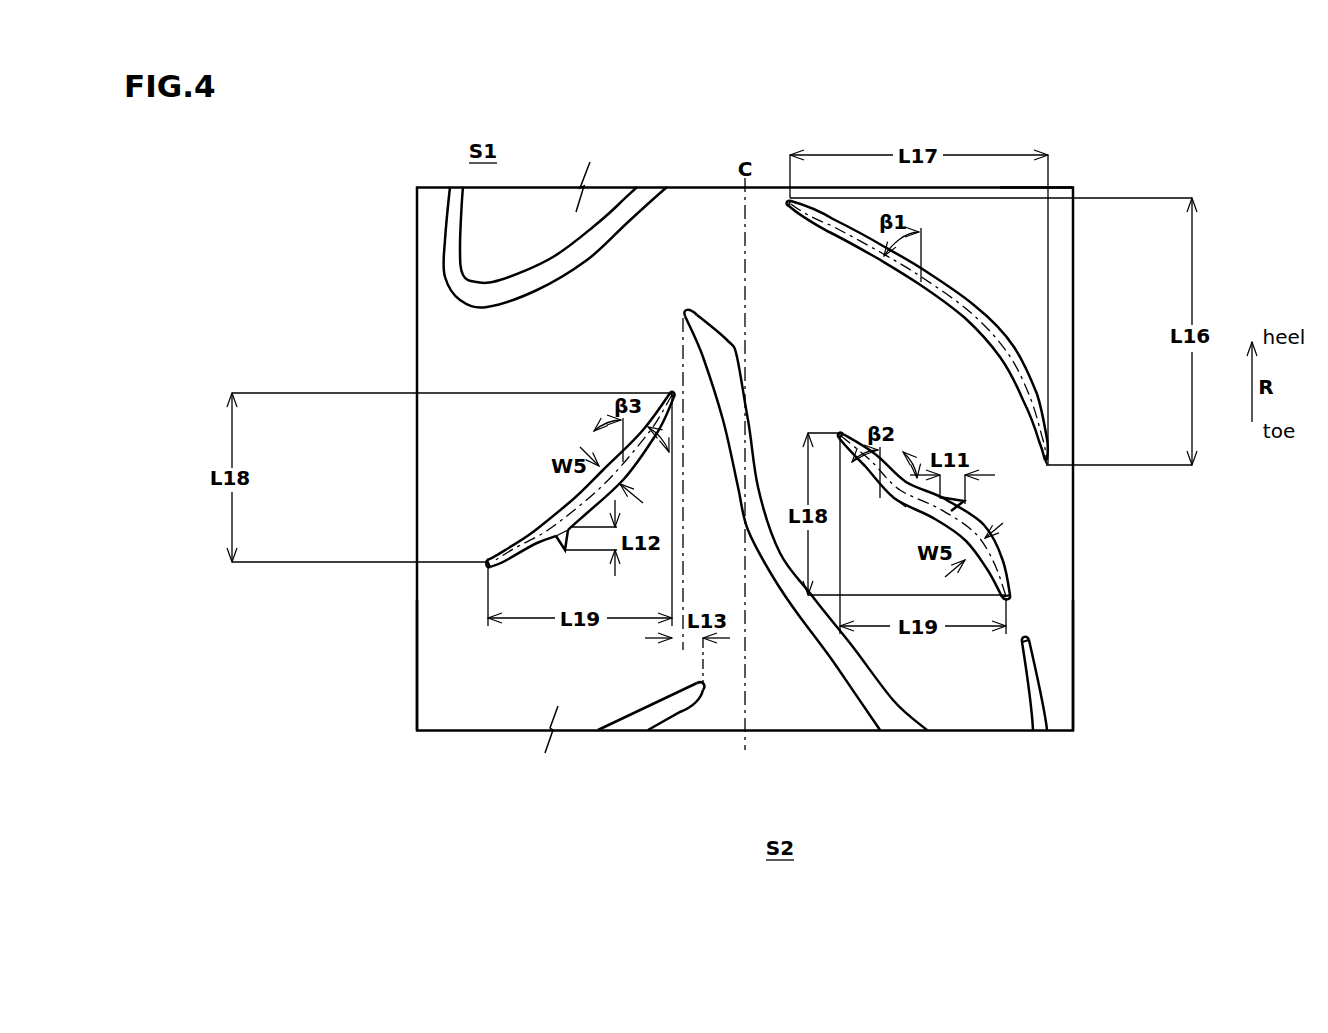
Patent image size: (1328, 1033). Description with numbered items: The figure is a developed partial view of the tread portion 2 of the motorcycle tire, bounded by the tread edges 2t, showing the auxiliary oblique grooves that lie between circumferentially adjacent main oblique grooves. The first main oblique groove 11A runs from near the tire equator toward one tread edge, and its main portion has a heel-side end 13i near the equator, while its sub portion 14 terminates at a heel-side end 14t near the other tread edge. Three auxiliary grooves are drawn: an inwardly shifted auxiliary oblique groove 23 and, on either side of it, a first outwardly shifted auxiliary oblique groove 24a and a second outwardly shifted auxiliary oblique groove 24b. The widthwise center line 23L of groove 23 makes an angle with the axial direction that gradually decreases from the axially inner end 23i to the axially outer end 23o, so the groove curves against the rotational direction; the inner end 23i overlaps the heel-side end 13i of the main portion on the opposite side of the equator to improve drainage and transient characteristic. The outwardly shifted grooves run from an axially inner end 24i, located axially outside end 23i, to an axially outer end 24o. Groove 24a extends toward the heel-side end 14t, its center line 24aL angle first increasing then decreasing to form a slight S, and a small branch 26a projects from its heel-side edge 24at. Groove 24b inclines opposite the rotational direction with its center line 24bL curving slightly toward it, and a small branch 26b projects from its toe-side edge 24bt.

The tread portion 2 is at (1083, 169).
The tread edge 2t is at (1074, 661).
The first main oblique groove 11A is at (805, 641).
The heel-side end of the main portion 13i is at (682, 305).
The sub portion 14 is at (1040, 701).
The heel-side end of the sub portion 14t is at (1027, 640).
The inwardly shifted auxiliary oblique groove 23 is at (973, 302).
The widthwise center line of the inwardly shifted auxiliary oblique groove 23L is at (1006, 360).
The axially inner end of the inwardly shifted auxiliary oblique groove 23i is at (790, 200).
The axially outer end of the inwardly shifted auxiliary oblique groove 23o is at (1049, 465).
The first outwardly shifted auxiliary oblique groove 24a is at (1000, 564).
The second outwardly shifted auxiliary oblique groove 24b is at (562, 503).
The axially inner end of the outwardly shifted auxiliary oblique groove 24i is at (668, 390).
The axially outer end of the outwardly shifted auxiliary oblique groove 24o is at (488, 565).
The widthwise center line of the first outwardly shifted auxiliary oblique groove 24aL is at (995, 574).
The center line of the second outwardly shifted auxiliary oblique groove 24bL is at (552, 527).
The heel-side edge of the first outwardly shifted auxiliary oblique groove 24at is at (897, 497).
The toe-side edge of the second outwardly shifted auxiliary oblique groove 24bt is at (552, 543).
The small branch 26a is at (963, 503).
The small branch 26b is at (564, 547).